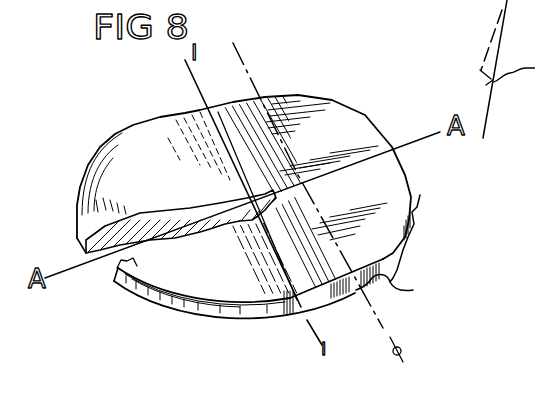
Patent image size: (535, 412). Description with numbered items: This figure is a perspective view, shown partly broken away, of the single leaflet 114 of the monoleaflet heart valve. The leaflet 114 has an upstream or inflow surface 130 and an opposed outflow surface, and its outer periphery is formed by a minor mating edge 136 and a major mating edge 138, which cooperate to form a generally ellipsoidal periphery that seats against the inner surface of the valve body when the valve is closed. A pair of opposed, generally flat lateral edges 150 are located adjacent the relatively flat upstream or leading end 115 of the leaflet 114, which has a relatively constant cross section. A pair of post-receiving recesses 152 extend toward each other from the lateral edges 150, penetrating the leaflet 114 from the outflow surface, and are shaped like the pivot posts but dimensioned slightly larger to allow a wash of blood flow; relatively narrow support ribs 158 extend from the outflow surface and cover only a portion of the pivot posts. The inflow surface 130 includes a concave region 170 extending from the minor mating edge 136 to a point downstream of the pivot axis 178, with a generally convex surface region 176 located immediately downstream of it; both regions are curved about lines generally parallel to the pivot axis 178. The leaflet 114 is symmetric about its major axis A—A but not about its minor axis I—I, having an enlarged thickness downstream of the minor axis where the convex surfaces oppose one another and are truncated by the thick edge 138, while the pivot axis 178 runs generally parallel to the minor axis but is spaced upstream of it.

The leaflet 114 is at (345, 122).
The leading end 115 is at (388, 183).
The inflow surface 130 is at (326, 123).
The minor mating edge 136 is at (427, 188).
The major mating edge 138 is at (78, 233).
The lateral edges 150 is at (330, 297).
The post-receiving recesses 152 is at (405, 284).
The support ribs 158 is at (288, 317).
The concave region 170 is at (280, 233).
The convex surface region 176 is at (138, 210).
The pivot axis 178 is at (401, 350).